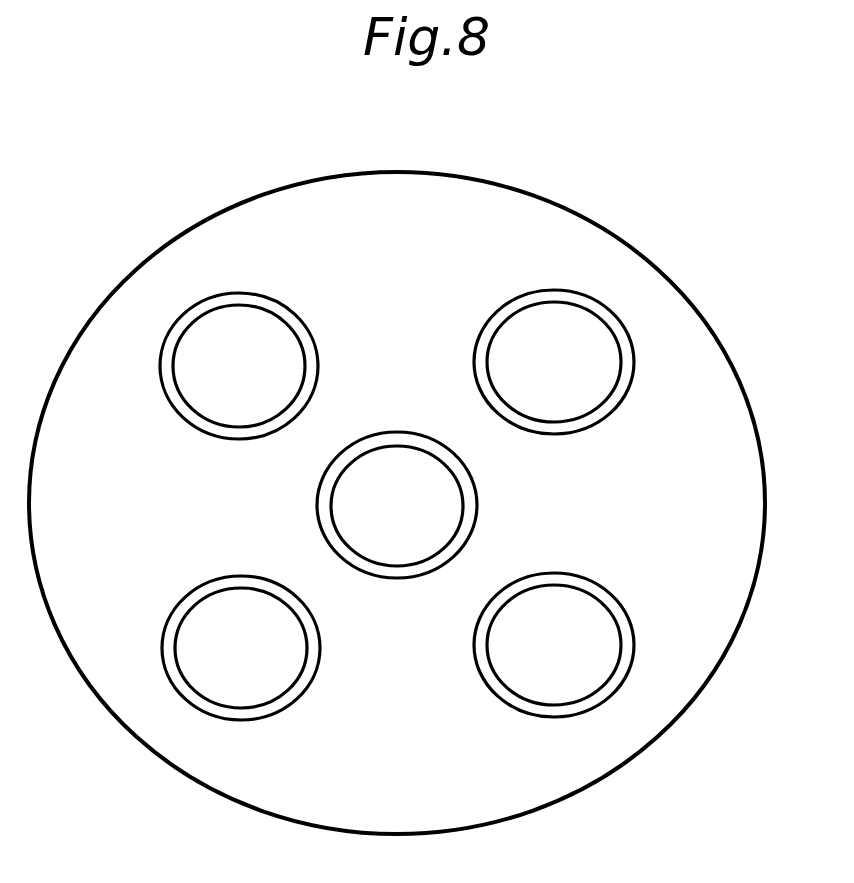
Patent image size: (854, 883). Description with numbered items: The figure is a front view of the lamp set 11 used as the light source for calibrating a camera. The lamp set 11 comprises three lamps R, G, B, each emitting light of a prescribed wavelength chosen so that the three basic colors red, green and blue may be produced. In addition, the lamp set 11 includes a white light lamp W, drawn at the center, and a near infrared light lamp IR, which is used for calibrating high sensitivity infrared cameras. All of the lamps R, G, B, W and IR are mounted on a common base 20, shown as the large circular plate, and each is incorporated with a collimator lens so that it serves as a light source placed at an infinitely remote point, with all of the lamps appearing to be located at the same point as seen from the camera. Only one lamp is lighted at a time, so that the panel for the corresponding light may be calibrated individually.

The lamp set 11 is at (400, 494).
The common base 20 is at (672, 722).
The red lamp R is at (217, 387).
The green lamp G is at (563, 383).
The white light lamp W is at (375, 528).
The near infrared light lamp IR is at (220, 669).
The blue lamp B is at (532, 666).